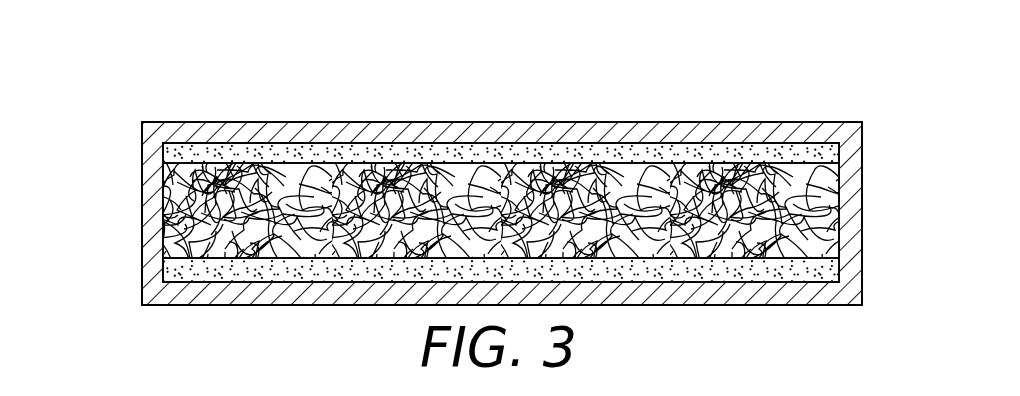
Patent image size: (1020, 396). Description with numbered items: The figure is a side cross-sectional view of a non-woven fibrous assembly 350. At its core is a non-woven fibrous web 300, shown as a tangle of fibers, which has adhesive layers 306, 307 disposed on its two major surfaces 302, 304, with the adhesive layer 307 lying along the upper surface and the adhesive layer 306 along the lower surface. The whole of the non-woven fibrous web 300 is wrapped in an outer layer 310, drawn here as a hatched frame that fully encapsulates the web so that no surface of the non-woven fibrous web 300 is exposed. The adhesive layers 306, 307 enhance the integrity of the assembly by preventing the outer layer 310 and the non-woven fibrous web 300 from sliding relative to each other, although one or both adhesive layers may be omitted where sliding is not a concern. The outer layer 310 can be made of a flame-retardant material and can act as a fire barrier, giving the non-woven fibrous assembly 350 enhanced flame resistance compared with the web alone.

The non-woven fibrous assembly 350 is at (835, 40).
The non-woven fibrous web 300 is at (852, 228).
The outer layer 310 is at (552, 140).
The upper membrane layer 302 is at (763, 162).
The major surface 304 is at (755, 262).
The adhesive layer 307 is at (170, 156).
The adhesive layer 306 is at (170, 272).